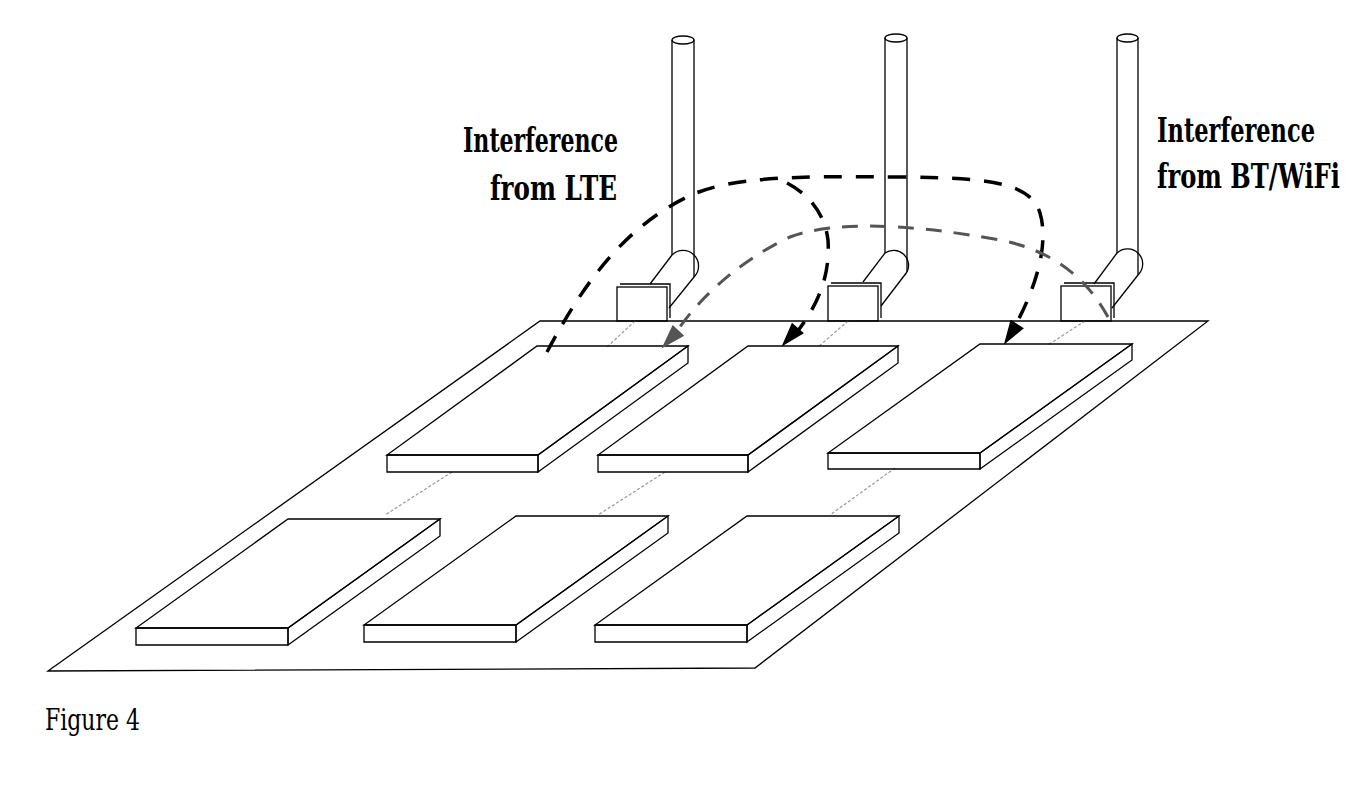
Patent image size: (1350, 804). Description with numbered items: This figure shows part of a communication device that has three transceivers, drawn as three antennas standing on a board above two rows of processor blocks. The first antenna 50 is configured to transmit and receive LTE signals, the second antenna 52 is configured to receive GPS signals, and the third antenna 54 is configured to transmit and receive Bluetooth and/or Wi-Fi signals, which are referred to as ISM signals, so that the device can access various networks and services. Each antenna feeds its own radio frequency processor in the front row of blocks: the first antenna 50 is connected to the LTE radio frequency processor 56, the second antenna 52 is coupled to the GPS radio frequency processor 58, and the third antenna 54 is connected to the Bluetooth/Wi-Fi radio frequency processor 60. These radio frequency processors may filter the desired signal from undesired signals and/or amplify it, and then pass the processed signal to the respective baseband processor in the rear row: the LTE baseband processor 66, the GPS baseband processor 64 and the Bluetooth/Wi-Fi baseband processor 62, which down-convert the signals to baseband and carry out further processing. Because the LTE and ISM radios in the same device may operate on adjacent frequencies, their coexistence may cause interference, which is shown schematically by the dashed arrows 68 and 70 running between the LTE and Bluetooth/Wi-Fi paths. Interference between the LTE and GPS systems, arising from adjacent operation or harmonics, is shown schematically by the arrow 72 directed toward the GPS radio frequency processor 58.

The first antenna 50 is at (632, 178).
The second antenna 52 is at (843, 177).
The third antenna 54 is at (1075, 177).
The LTE radio frequency processor 56 is at (537, 409).
The GPS radio frequency processor 58 is at (748, 409).
The Bluetooth/Wi-Fi radio frequency processor 60 is at (980, 406).
The Bluetooth/Wi-Fi baseband processor 62 is at (747, 579).
The GPS baseband processor 64 is at (516, 579).
The LTE baseband processor 66 is at (288, 582).
The arrow 68 is at (885, 286).
The arrow 70 is at (795, 264).
The arrow 72 is at (796, 264).